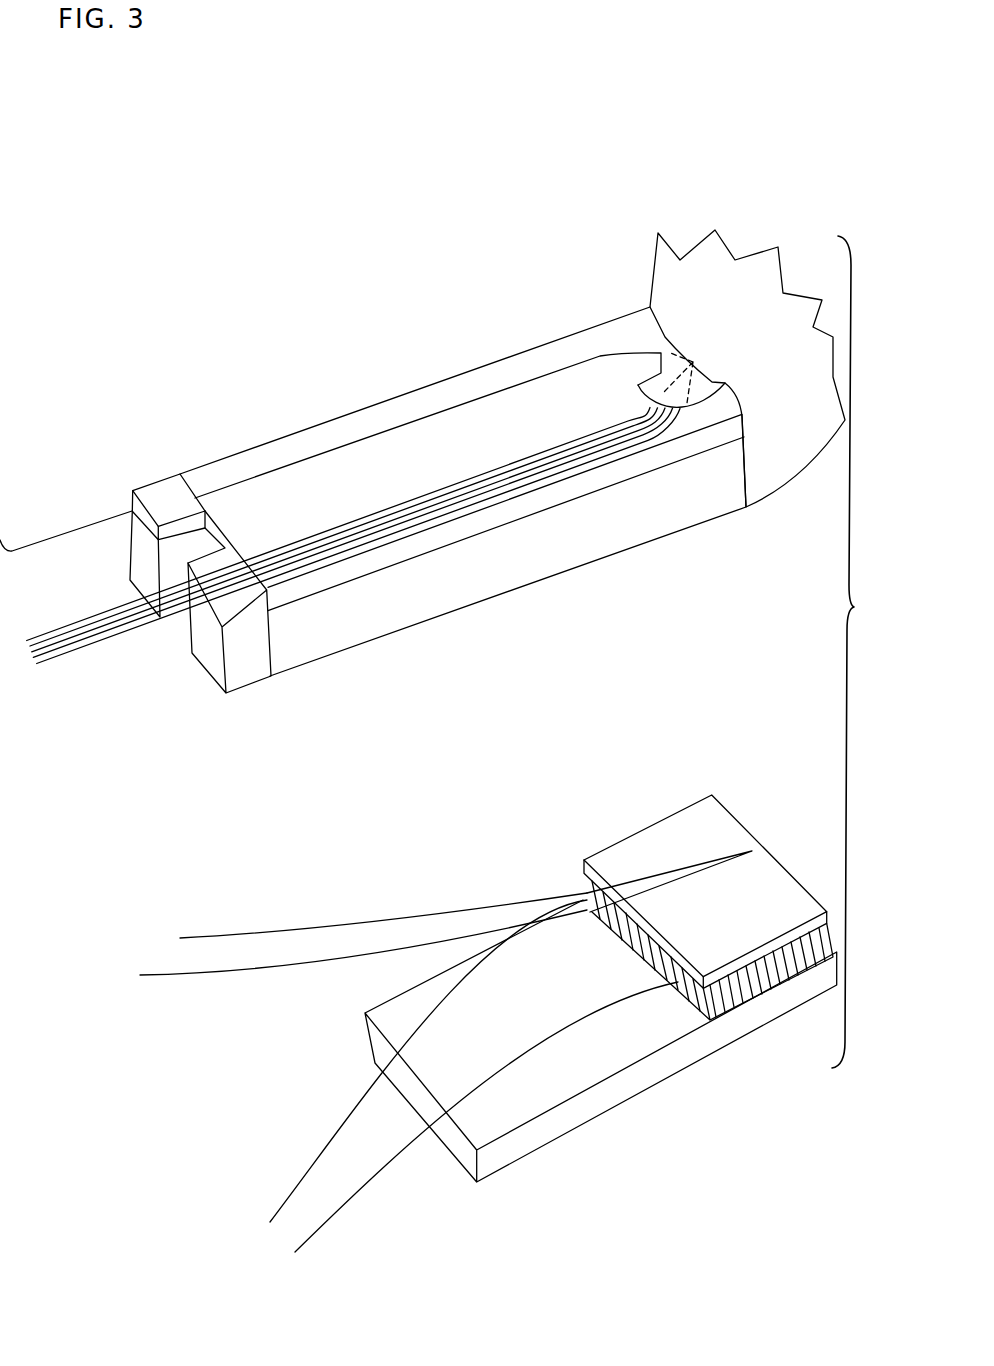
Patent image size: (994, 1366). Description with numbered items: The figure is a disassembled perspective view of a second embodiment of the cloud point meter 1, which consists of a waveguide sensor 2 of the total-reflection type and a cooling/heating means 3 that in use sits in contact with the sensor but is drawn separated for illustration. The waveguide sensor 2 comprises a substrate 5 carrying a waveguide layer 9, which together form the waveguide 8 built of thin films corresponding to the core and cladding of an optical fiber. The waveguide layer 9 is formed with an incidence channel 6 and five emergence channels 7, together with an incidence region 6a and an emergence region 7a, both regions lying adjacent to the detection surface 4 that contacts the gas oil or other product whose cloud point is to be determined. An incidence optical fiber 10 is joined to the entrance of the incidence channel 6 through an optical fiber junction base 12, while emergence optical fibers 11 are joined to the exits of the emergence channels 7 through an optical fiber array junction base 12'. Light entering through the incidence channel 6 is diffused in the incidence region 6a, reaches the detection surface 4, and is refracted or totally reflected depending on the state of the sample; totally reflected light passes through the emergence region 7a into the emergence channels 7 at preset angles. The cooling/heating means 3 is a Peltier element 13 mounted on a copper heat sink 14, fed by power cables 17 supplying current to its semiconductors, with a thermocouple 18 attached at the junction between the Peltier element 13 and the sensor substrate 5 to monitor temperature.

The cloud point meter 1 is at (854, 652).
The waveguide sensor 2 is at (545, 290).
The cooling/heating means 3 is at (762, 1068).
The detection surface 4 is at (750, 498).
The substrate 5 is at (683, 514).
The incidence channel 6 is at (302, 455).
The incidence region 6a is at (650, 307).
The emergence channels 7 is at (416, 505).
The emergence region 7a is at (707, 387).
The waveguide 8 is at (493, 328).
The waveguide layer 9 is at (595, 487).
The incidence optical fiber 10 is at (52, 532).
The emergence optical fibers 11 is at (112, 624).
The optical fiber junction base 12 is at (177, 510).
The optical fiber array junction base 12' is at (272, 611).
The Peltier element 13 is at (772, 880).
The heat sink 14 is at (585, 1112).
The power cables 17 is at (330, 1210).
The thermocouple 18 is at (280, 955).